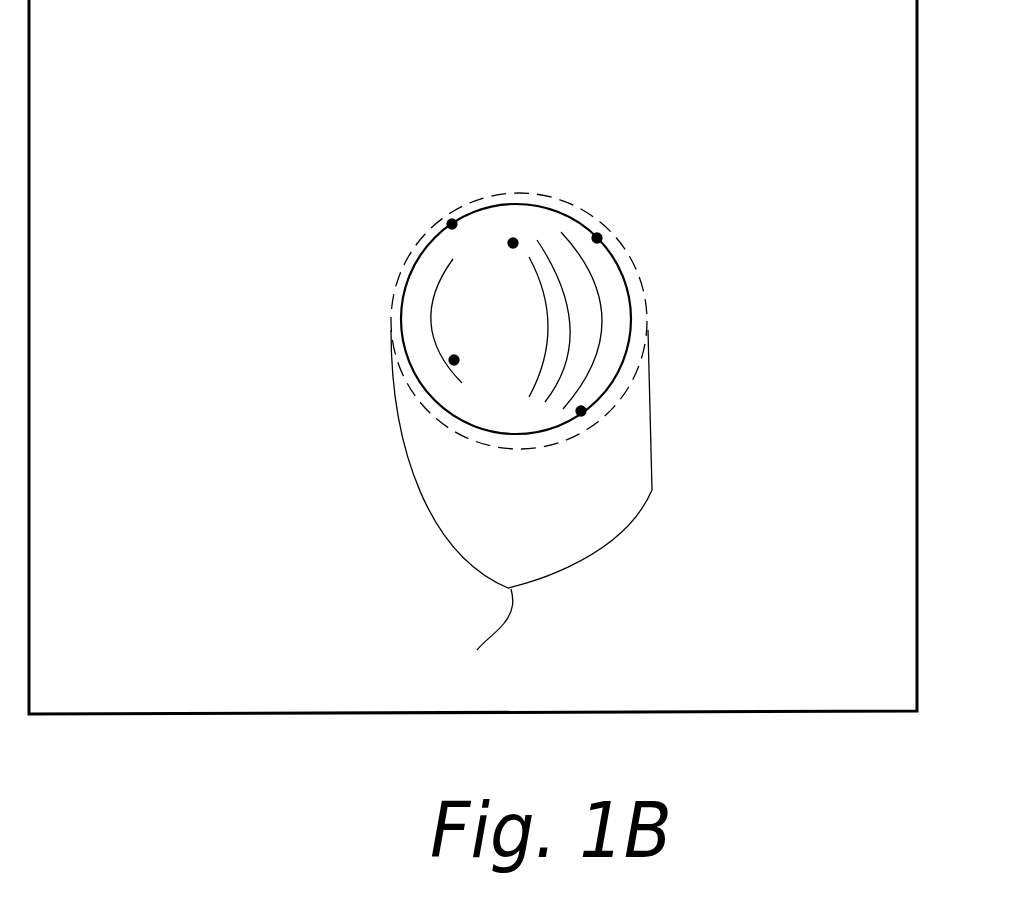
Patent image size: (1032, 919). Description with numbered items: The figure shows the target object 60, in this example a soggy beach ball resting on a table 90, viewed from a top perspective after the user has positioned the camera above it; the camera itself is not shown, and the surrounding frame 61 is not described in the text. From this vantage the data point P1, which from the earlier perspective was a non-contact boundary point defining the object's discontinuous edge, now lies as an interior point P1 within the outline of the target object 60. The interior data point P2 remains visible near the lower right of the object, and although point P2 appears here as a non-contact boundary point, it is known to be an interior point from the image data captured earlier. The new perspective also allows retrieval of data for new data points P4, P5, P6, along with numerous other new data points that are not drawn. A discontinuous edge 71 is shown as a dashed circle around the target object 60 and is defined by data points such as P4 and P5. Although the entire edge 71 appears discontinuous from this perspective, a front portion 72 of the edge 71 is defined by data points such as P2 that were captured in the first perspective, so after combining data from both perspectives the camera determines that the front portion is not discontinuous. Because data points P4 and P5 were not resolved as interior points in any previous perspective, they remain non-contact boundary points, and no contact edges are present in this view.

The target object 60 is at (517, 337).
The display frame 61 is at (803, 90).
The discontinuous edge 71 is at (639, 273).
The front portion 72 is at (484, 641).
The table 90 is at (798, 588).
The non-contact boundary data point P1 is at (454, 360).
The interior data point P2 is at (581, 411).
The new data point P4 is at (597, 238).
The new data point P5 is at (452, 224).
The new data point P6 is at (513, 243).